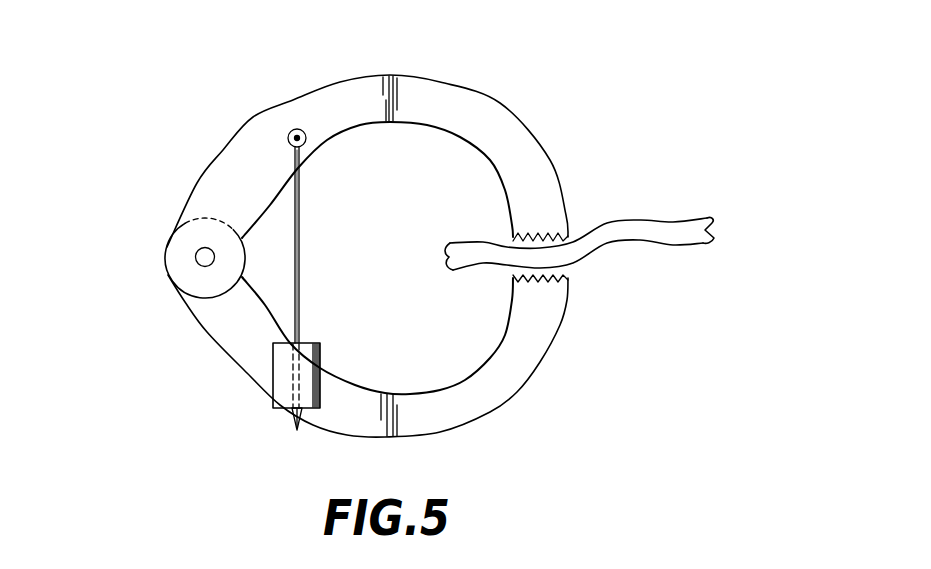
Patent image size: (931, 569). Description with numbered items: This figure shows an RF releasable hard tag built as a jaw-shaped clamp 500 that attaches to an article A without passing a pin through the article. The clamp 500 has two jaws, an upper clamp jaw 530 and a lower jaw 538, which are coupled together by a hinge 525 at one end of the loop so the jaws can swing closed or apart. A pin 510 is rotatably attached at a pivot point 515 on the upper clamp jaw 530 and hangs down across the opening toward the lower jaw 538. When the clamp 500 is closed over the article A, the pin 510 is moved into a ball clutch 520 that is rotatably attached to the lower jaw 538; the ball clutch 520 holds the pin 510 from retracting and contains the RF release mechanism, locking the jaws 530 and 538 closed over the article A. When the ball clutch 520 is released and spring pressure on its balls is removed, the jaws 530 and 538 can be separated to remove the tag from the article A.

The clamp 500 is at (140, 206).
The pin 510 is at (301, 249).
The pivot point 515 is at (297, 129).
The ball clutch 520 is at (273, 378).
The hinge 525 is at (196, 262).
The upper clamp jaw 530 is at (545, 178).
The lower jaw 538 is at (552, 318).
The article A is at (655, 223).